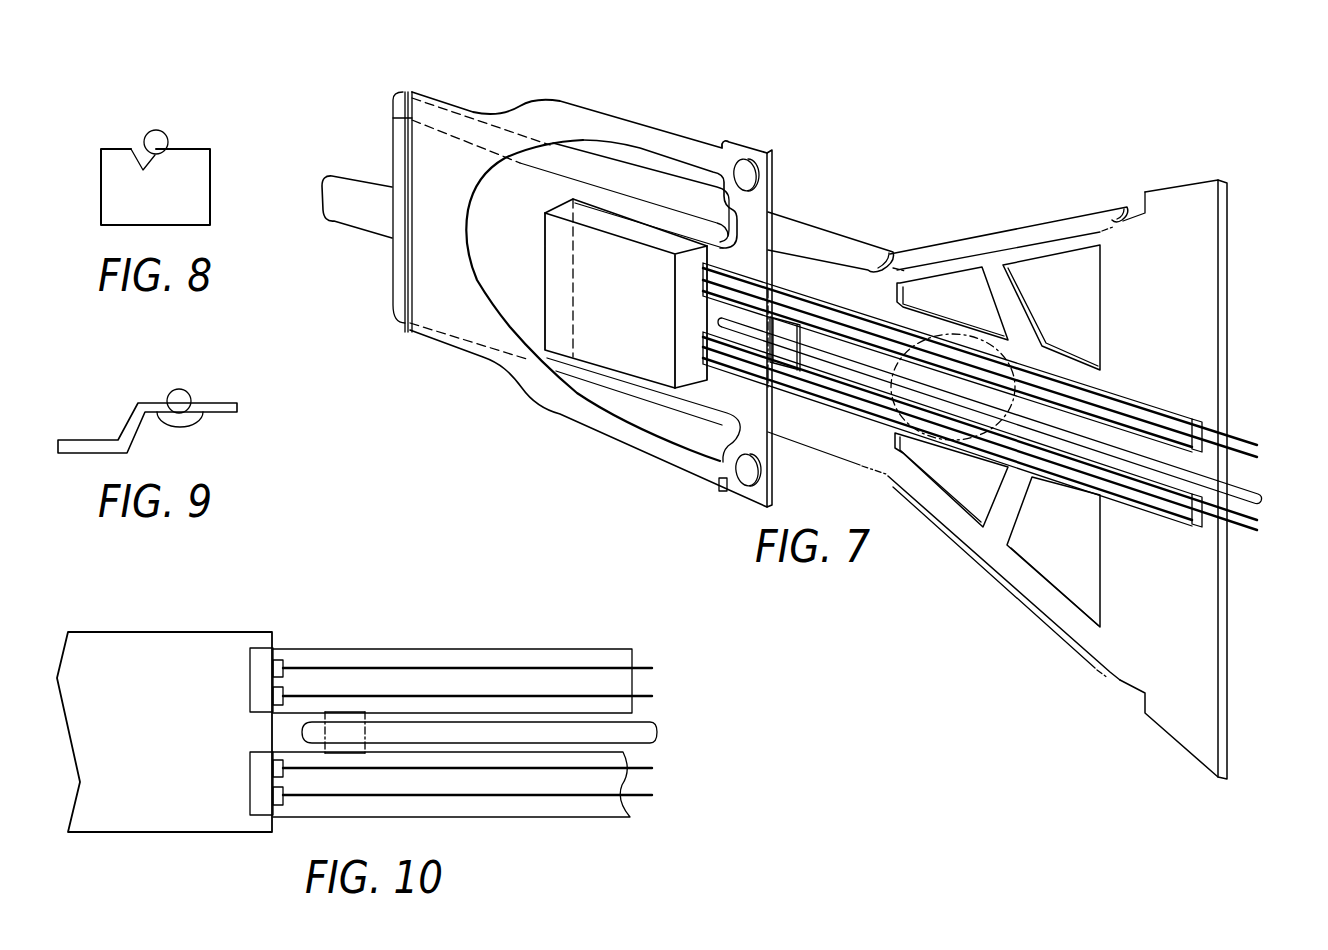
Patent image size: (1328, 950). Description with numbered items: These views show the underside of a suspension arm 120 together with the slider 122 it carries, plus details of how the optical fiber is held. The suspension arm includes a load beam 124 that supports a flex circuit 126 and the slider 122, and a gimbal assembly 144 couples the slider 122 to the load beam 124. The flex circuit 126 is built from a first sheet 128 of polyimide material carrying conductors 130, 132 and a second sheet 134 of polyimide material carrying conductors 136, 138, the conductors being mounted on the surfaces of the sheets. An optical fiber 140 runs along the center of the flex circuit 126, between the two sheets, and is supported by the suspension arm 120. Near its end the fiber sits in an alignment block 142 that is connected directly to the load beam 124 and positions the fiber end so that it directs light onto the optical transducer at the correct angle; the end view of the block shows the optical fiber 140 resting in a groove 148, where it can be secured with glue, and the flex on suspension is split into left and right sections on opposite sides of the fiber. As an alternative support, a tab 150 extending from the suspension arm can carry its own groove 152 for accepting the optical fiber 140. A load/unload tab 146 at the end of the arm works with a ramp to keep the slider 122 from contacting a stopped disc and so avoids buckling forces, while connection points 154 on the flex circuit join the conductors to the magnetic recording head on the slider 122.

In FIG. 7, the suspension arm 120 is at (948, 175).
In FIG. 7, the slider 122 is at (737, 377).
In FIG. 10, the slider 122 is at (155, 820).
In FIG. 7, the load beam 124 is at (836, 283).
In FIG. 7, the flex circuit 126 is at (1182, 387).
In FIG. 10, the flex circuit 126 is at (627, 836).
In FIG. 7, the first sheet 128 is at (1153, 508).
In FIG. 10, the first sheet 128 is at (585, 807).
In FIG. 7, the conductor 130 is at (1247, 532).
In FIG. 10, the conductor 130 is at (647, 768).
In FIG. 7, the conductor 132 is at (1240, 532).
In FIG. 10, the conductor 132 is at (647, 795).
In FIG. 7, the second sheet 134 is at (1150, 410).
In FIG. 10, the second sheet 134 is at (610, 657).
In FIG. 7, the conductor 136 is at (1230, 423).
In FIG. 10, the conductor 136 is at (647, 668).
In FIG. 7, the conductor 138 is at (1250, 470).
In FIG. 10, the conductor 138 is at (647, 697).
In FIG. 8, the optical fiber 140 is at (156, 130).
In FIG. 9, the optical fiber 140 is at (177, 395).
In FIG. 7, the optical fiber 140 is at (1264, 496).
In FIG. 10, the optical fiber 140 is at (658, 733).
In FIG. 8, the alignment block 142 is at (200, 183).
In FIG. 7, the alignment block 142 is at (790, 353).
In FIG. 10, the alignment block 142 is at (343, 715).
In FIG. 7, the gimbal assembly 144 is at (540, 117).
In FIG. 7, the load/unload tab 146 is at (372, 218).
In FIG. 8, the groove 148 is at (136, 152).
In FIG. 9, the tab 150 is at (120, 422).
In FIG. 9, the groove 152 is at (180, 413).
In FIG. 10, the connection points 154 is at (273, 795).